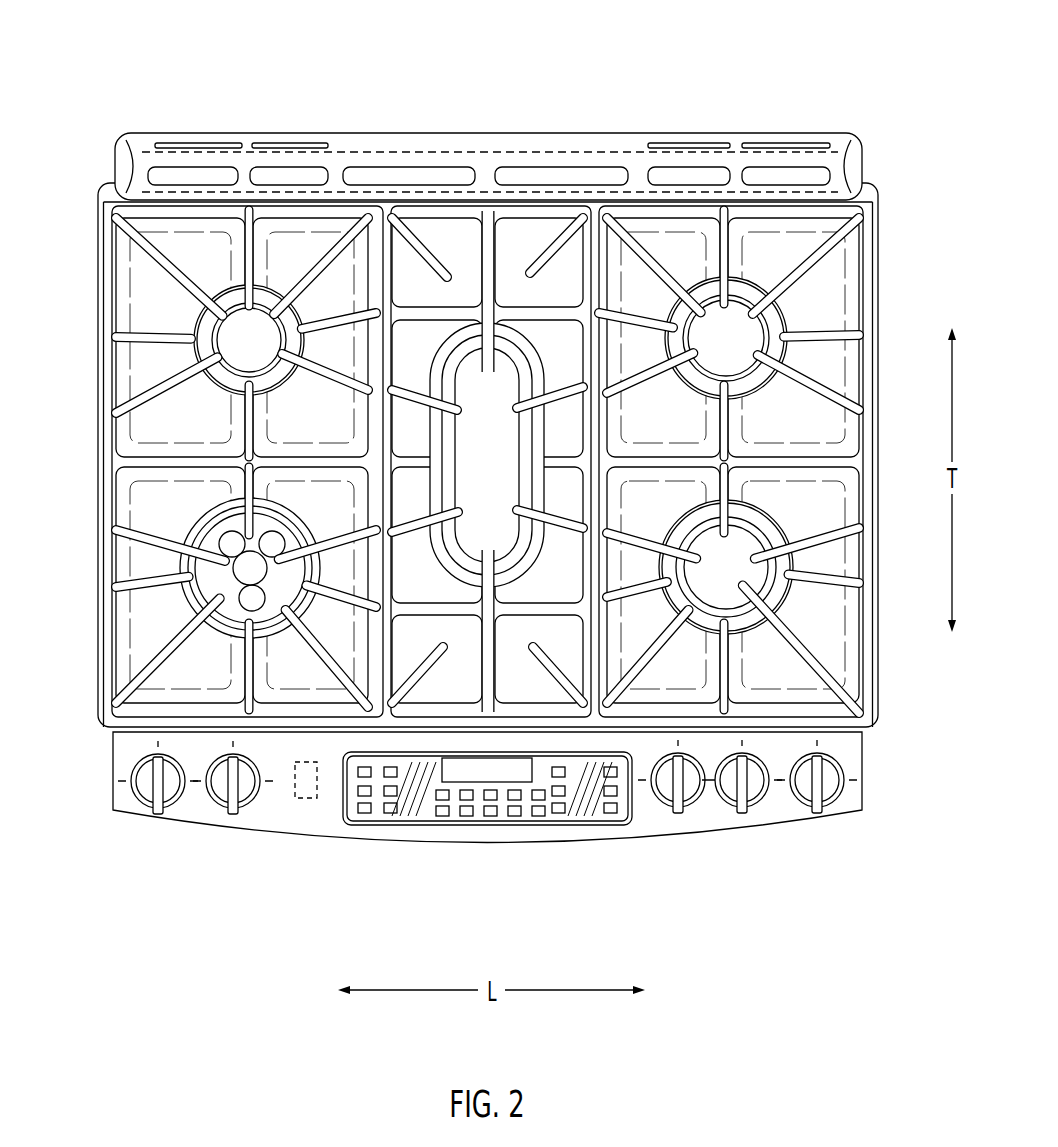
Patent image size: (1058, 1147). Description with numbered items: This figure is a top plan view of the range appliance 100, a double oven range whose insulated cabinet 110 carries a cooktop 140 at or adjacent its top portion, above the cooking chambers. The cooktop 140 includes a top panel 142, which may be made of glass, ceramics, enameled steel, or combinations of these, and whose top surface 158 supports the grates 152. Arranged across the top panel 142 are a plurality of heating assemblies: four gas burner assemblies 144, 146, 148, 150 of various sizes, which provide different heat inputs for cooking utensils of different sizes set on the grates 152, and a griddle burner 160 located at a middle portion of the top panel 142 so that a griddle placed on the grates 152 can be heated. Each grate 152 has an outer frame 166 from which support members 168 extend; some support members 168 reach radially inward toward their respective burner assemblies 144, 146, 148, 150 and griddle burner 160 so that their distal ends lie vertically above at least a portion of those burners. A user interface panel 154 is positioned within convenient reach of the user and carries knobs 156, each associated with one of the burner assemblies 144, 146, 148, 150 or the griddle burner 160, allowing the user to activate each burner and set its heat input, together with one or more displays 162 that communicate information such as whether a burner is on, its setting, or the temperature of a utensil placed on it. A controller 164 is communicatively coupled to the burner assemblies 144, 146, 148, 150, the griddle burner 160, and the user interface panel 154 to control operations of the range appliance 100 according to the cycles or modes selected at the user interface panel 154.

The range appliance 100 is at (130, 108).
The cabinet 110 is at (98, 353).
The cooktop 140 is at (878, 197).
The top panel 142 is at (850, 667).
The burner assembly 144 is at (207, 333).
The burner assembly 146 is at (222, 537).
The burner assembly 148 is at (725, 337).
The burner assembly 150 is at (733, 568).
The grate 152 is at (97, 548).
The user interface panel 154 is at (430, 825).
The knob 156 is at (158, 812).
The top surface 158 is at (145, 650).
The griddle burner 160 is at (473, 360).
The display 162 is at (508, 768).
The controller 164 is at (312, 800).
The outer frame 166 is at (193, 217).
The support member 168 is at (322, 250).